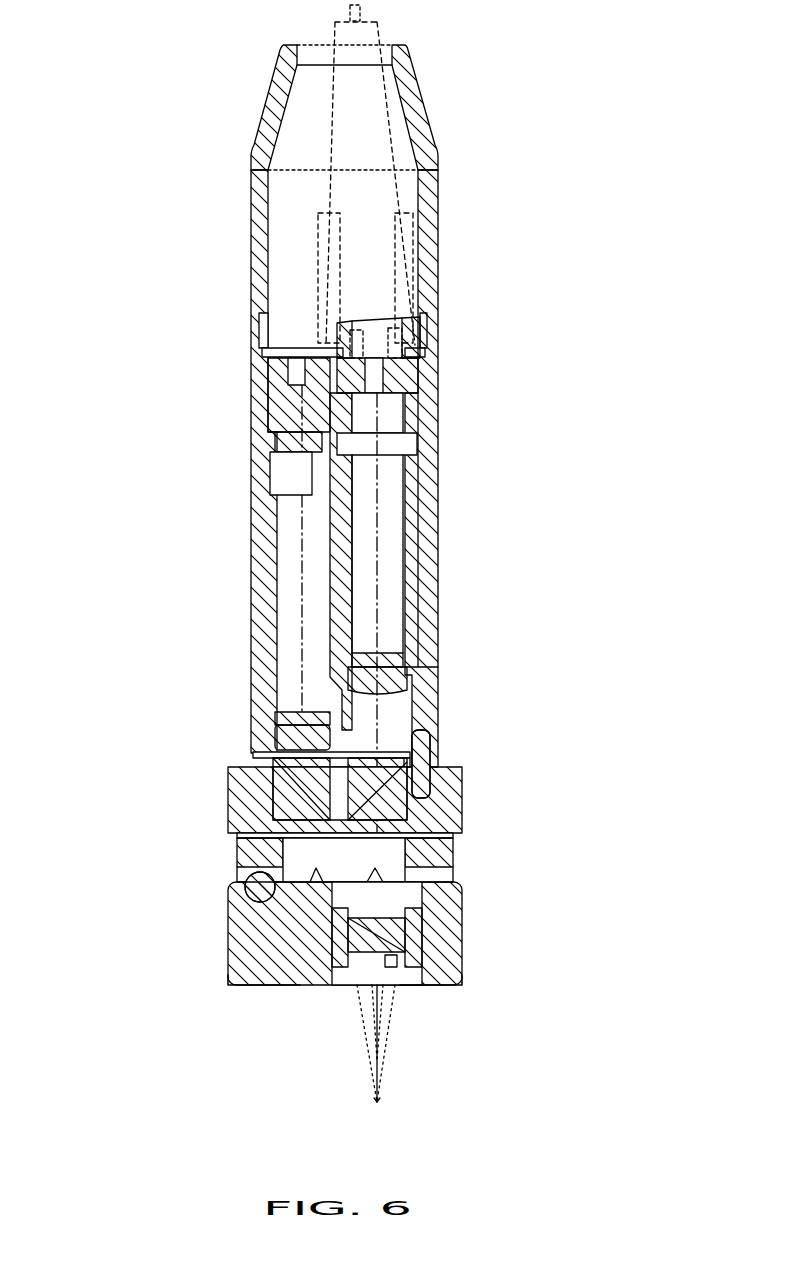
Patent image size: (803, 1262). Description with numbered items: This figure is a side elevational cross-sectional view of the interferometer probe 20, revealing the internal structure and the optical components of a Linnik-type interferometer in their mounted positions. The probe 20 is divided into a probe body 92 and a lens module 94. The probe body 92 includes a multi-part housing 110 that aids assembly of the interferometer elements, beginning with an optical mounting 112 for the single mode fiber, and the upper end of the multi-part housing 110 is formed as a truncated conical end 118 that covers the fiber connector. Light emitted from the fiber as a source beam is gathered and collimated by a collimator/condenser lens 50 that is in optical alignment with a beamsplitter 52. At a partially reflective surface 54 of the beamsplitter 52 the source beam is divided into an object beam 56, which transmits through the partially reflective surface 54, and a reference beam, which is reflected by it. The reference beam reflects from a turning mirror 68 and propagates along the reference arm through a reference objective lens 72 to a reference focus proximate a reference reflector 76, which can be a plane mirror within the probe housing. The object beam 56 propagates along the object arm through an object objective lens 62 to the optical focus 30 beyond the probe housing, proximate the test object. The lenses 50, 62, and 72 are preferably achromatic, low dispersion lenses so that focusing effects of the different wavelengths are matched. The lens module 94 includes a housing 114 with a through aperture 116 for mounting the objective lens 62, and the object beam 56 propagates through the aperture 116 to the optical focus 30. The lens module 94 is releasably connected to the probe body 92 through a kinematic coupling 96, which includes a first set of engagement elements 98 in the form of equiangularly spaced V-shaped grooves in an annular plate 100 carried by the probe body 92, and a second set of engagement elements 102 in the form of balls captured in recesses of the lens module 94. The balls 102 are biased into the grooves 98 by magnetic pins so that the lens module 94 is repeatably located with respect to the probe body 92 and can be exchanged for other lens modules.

The interferometer probe 20 is at (203, 270).
The optical focus 30 is at (378, 1101).
The collimator/condenser lens 50 is at (405, 660).
The beamsplitter 52 is at (410, 812).
The partially reflective surface 54 is at (415, 780).
The object beam 56 is at (365, 1020).
The object objective lens 62 is at (397, 933).
The turning mirror 68 is at (255, 760).
The reference objective lens 72 is at (283, 722).
The reference reflector 76 is at (300, 455).
The probe body 92 is at (447, 540).
The lens module 94 is at (227, 952).
The kinematic coupling 96 is at (483, 833).
The first set of engagement elements 98 is at (245, 872).
The annular plate 100 is at (240, 847).
The second set of engagement elements 102 is at (248, 887).
The multi-part housing 110 is at (262, 617).
The optical mounting 112 is at (383, 379).
The housing 114 is at (277, 970).
The through aperture 116 is at (425, 985).
The truncated conical end 118 is at (425, 100).